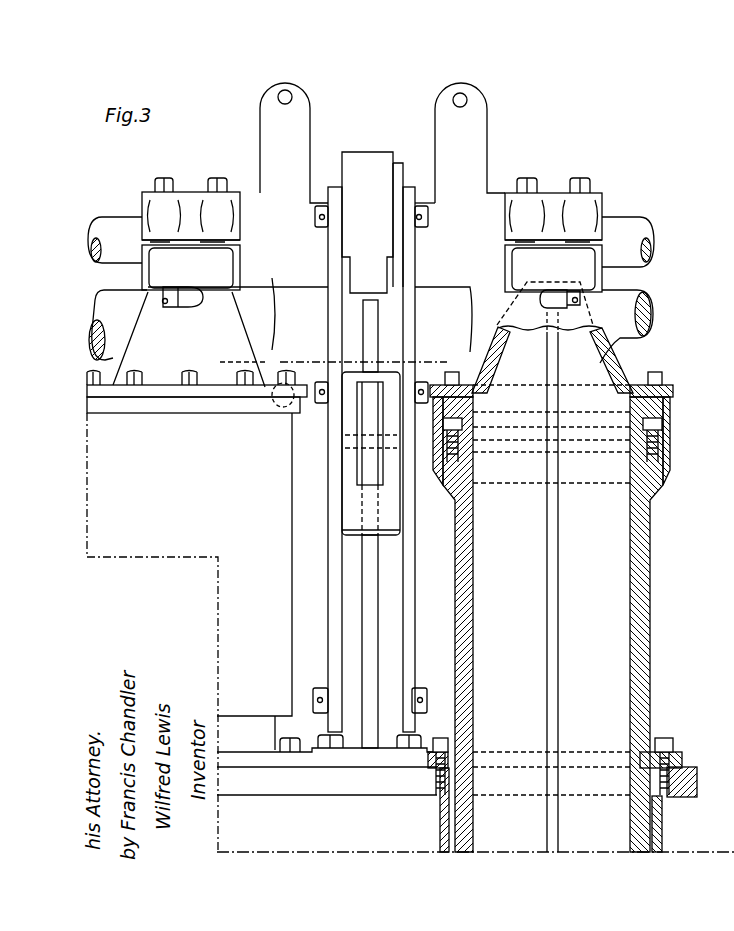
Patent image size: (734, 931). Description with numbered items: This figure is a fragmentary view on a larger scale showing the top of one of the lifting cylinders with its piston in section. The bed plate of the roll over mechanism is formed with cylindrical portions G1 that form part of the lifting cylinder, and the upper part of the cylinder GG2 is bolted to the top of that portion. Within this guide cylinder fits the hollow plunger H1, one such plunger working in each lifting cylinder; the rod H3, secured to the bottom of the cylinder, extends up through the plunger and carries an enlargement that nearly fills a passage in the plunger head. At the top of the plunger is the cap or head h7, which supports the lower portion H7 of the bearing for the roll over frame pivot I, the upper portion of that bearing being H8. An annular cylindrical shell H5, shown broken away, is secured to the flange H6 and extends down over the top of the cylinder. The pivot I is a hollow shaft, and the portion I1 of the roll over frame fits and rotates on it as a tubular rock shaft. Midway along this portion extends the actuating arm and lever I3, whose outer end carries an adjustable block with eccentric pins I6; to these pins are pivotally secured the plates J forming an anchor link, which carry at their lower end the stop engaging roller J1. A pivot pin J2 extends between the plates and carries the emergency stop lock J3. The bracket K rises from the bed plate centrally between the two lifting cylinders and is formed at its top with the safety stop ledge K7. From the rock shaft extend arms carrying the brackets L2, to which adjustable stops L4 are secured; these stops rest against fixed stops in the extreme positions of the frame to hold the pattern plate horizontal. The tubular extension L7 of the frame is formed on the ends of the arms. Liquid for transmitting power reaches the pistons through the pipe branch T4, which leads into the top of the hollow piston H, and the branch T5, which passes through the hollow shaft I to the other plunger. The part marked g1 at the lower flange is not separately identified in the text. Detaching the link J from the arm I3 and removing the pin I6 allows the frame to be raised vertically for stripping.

The adjustable stop L4 is at (293, 97).
The bracket L2 is at (382, 143).
The upper portion of bearing H8 is at (372, 209).
The pivot I is at (371, 242).
The lower portion of bearing H7 is at (357, 313).
The tubular extension of roll over frame L7 is at (371, 326).
The pipe branch T5 is at (166, 303).
The pipe branch T4 is at (567, 293).
The actuating arm and lever I3 is at (367, 222).
The eccentric pin I6 is at (423, 206).
The portion of roll over frame I1 is at (418, 459).
The plate of link J is at (333, 320).
The safety stop ledge K7 is at (370, 300).
The emergency stop lock J3 is at (385, 519).
The pivot pin J2 is at (320, 403).
The bracket K is at (365, 637).
The stop engaging roller J1 is at (410, 688).
The flange H6 is at (191, 398).
The hollow plunger H1 is at (640, 657).
The cap or head of plunger h7 is at (552, 359).
The annular cylindrical shell H5 is at (690, 418).
The upper part of lifting cylinder GG2 is at (647, 600).
The rod H3 is at (556, 617).
The hollow piston H is at (475, 792).
The cylindrical portion of bed plate G1 is at (662, 828).
The flange block g1 is at (645, 813).